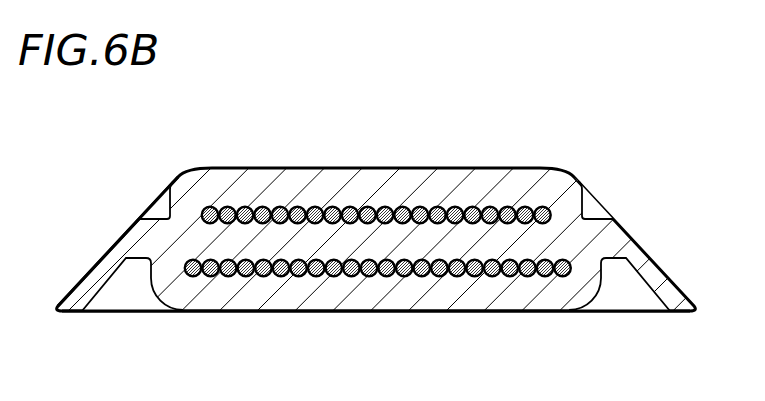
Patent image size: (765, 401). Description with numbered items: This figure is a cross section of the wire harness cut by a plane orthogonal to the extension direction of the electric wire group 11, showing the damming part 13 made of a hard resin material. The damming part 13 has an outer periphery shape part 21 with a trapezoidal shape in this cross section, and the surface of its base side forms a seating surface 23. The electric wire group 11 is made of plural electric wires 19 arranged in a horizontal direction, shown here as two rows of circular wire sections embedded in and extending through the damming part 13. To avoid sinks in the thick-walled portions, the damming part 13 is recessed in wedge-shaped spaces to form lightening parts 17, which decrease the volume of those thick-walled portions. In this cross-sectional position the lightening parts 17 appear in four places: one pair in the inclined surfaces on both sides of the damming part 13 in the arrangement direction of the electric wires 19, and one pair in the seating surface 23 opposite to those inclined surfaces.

The electric wire group 11 is at (378, 243).
The damming part 13 is at (183, 168).
The lightening part 17 is at (157, 206).
The electric wire 19 is at (210, 206).
The outer periphery shape part 21 is at (100, 252).
The seating surface 23 is at (393, 313).